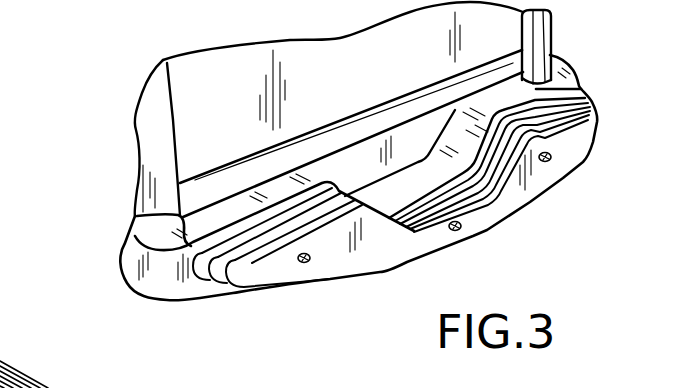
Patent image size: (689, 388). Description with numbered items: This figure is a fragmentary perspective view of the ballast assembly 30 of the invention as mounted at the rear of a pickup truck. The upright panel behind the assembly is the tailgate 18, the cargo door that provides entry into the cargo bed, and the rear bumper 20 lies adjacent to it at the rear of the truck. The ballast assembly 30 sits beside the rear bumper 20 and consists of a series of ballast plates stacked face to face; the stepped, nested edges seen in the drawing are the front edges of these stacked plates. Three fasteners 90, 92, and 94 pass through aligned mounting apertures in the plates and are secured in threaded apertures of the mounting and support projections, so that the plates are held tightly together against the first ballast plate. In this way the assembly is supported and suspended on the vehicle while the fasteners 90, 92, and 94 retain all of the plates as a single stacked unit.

The tailgate 18 is at (203, 67).
The rear bumper 20 is at (130, 273).
The ballast assembly 30 is at (405, 258).
The fastener 90 is at (462, 230).
The fastener 92 is at (305, 263).
The fastener 94 is at (550, 159).